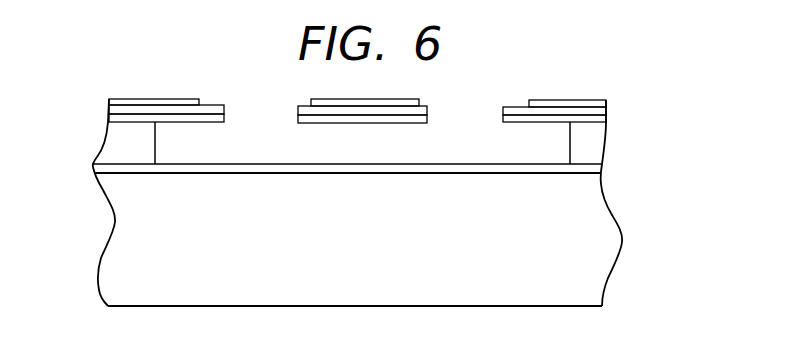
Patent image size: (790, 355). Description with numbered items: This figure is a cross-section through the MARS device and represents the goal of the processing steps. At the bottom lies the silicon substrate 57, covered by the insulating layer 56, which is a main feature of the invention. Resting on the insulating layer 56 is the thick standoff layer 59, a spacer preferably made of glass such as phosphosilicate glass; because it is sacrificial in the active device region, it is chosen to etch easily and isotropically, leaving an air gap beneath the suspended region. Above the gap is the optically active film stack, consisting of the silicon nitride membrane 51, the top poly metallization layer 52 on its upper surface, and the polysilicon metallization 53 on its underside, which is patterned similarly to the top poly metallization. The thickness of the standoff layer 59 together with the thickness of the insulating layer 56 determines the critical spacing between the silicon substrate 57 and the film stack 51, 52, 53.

The silicon nitride membrane 51 is at (302, 108).
The top poly metallization layer 52 is at (567, 101).
The polysilicon metallization on the underside of the silicon nitride layer 53 is at (415, 121).
The insulating layer 56 is at (597, 168).
The silicon substrate 57 is at (605, 240).
The standoff layer 59 is at (120, 153).